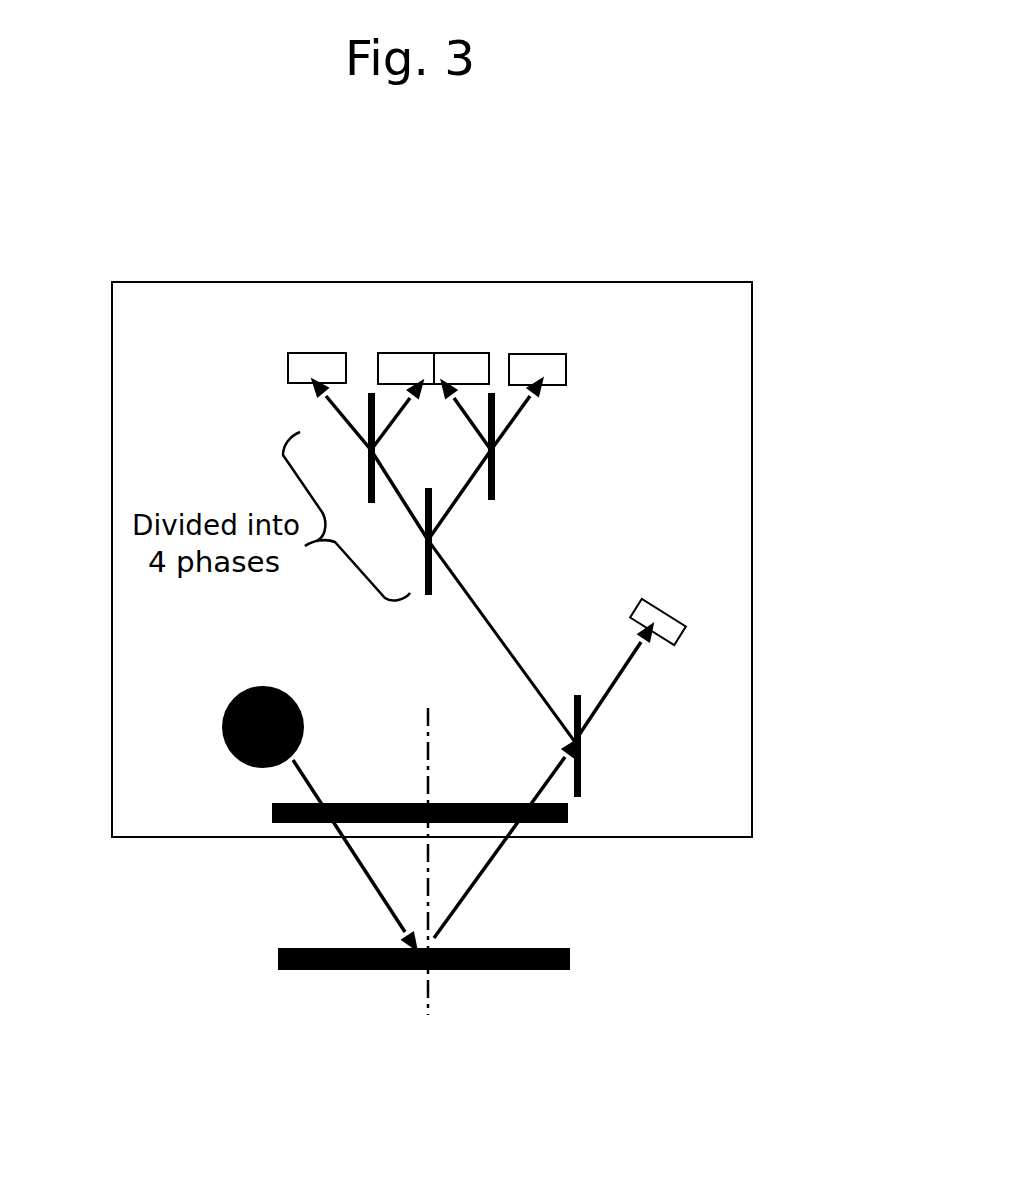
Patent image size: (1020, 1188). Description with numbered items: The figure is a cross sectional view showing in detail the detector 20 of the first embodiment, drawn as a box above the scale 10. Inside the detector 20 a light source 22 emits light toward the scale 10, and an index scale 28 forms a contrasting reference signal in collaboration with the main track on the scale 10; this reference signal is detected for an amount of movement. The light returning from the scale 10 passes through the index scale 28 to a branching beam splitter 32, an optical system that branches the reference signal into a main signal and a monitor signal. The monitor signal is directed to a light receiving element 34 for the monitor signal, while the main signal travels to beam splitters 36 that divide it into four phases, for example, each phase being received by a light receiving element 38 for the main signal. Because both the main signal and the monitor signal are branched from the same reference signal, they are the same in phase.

The scale 10 is at (570, 958).
The detector 20 is at (222, 282).
The light source 22 is at (222, 718).
The index scale 28 is at (570, 815).
The branching beam splitter 32 is at (582, 773).
The light receiving element for monitor signal 34 is at (658, 602).
The beam splitters 36 is at (497, 475).
The light receiving element for main signal 38 is at (324, 353).